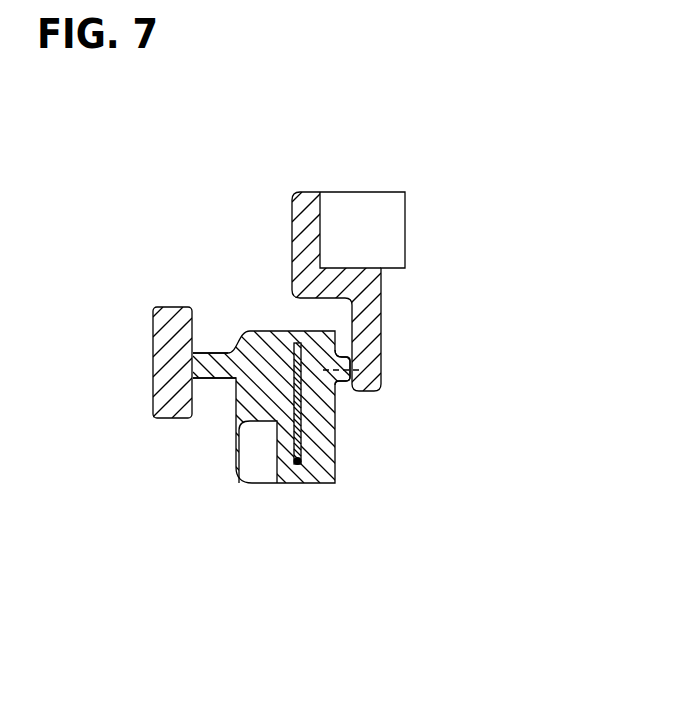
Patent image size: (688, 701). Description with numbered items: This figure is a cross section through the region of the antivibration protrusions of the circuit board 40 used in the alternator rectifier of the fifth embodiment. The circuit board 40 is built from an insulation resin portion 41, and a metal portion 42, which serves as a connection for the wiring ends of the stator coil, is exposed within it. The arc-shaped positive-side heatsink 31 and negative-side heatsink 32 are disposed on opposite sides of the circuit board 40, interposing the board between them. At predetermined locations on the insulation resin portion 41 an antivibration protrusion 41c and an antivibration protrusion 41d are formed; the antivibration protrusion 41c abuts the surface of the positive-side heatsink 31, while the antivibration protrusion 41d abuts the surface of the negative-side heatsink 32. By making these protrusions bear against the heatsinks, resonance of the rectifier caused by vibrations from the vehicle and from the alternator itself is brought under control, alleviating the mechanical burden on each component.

The positive-side heatsink 31 is at (383, 305).
The negative-side heatsink 32 is at (182, 306).
The circuit board 40 is at (315, 481).
The insulation resin portion 41 is at (315, 453).
The antivibration protrusion 41c is at (347, 386).
The antivibration protrusion 41d is at (212, 381).
The metal portion 42 is at (279, 459).